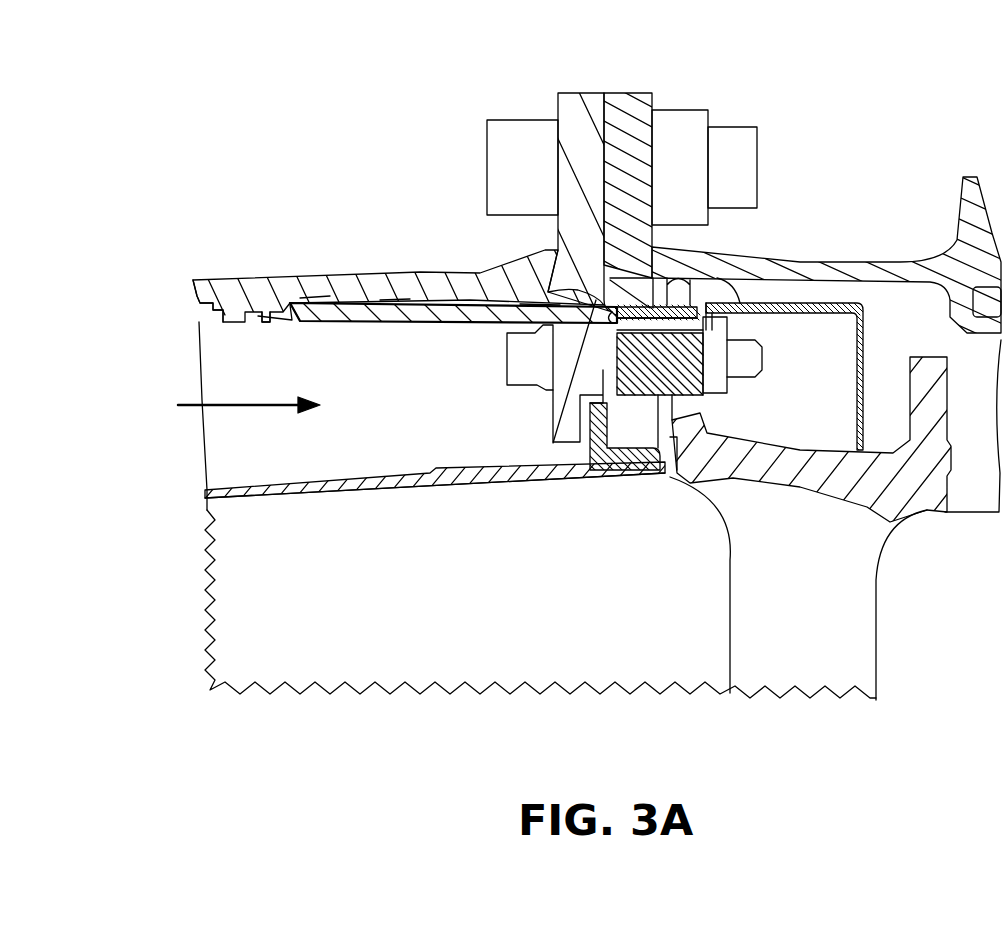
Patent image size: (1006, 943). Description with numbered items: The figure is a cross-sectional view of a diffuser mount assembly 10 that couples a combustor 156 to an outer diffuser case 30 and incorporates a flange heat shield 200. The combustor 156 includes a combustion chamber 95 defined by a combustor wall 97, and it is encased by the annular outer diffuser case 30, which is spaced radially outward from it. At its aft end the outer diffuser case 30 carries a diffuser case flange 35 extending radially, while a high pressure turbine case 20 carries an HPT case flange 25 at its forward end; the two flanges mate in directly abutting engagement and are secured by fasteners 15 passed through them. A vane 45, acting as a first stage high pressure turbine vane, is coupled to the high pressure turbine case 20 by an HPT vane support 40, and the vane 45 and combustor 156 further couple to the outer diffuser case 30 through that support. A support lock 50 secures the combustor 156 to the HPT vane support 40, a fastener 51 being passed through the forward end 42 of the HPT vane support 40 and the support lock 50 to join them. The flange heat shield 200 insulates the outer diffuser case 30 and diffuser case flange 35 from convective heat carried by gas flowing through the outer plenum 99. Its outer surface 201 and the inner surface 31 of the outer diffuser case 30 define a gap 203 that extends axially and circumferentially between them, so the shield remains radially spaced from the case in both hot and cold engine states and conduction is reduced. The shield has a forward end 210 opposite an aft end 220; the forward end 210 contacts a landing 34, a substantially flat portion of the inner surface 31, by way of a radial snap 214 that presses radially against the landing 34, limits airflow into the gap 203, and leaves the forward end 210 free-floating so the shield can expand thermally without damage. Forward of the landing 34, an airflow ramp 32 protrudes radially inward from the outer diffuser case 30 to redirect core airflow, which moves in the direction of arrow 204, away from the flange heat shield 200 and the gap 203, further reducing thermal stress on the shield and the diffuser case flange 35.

The diffuser mount assembly 10 is at (232, 72).
The fastener 15 is at (500, 165).
The high pressure turbine case 20 is at (878, 270).
The HPT case flange 25 is at (650, 104).
The outer diffuser case 30 is at (373, 282).
The inner surface of outer diffuser case 31 is at (333, 282).
The airflow ramp 32 is at (200, 335).
The landing 34 is at (273, 330).
The diffuser case flange 35 is at (568, 130).
The HPT vane support 40 is at (808, 307).
The forward end of HPT vane support 42 is at (693, 383).
The vane 45 is at (842, 610).
The support lock 50 is at (558, 413).
The fastener 51 is at (510, 375).
The combustion chamber 95 is at (416, 588).
The combustor wall 97 is at (318, 498).
The outer plenum 99 is at (405, 389).
The combustor 156 is at (408, 533).
The flange heat shield 200 is at (449, 308).
The outer surface of flange heat shield 201 is at (397, 300).
The gap 203 is at (540, 305).
The arrow 204 is at (226, 407).
The forward end of flange heat shield 210 is at (300, 318).
The radial snap 214 is at (270, 322).
The aft end of flange heat shield 220 is at (712, 330).